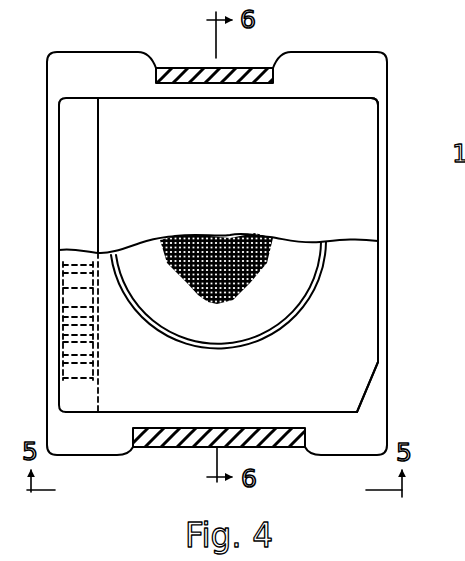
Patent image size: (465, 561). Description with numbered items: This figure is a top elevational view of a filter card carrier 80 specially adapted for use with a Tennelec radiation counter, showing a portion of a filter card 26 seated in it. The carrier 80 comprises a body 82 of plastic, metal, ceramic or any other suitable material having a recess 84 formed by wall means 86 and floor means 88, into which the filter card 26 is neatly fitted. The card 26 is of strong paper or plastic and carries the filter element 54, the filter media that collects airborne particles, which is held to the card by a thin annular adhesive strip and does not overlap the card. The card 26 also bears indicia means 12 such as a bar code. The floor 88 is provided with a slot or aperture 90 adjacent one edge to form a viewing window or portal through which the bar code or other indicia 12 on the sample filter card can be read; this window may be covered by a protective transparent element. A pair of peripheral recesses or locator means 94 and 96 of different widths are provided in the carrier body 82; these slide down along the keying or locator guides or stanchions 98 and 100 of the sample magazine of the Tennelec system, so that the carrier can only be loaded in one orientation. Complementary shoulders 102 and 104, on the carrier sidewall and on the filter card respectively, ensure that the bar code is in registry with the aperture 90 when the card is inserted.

The indicia means 12 is at (63, 366).
The card 26 is at (365, 332).
The filter element 54 is at (285, 293).
The carrier 80 is at (250, 237).
The body 82 is at (347, 65).
The recess 84 is at (357, 186).
The wall means 86 is at (378, 138).
The floor means 88 is at (302, 193).
The aperture 90 is at (84, 183).
The peripheral recess 94 is at (163, 67).
The peripheral recess 96 is at (140, 446).
The locator guide 98 is at (237, 68).
The locator guide 100 is at (235, 412).
The shoulder 102 is at (378, 376).
The shoulder 104 is at (357, 405).